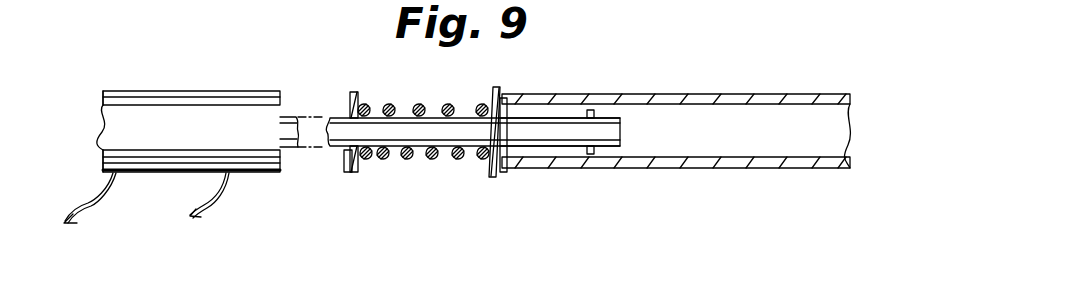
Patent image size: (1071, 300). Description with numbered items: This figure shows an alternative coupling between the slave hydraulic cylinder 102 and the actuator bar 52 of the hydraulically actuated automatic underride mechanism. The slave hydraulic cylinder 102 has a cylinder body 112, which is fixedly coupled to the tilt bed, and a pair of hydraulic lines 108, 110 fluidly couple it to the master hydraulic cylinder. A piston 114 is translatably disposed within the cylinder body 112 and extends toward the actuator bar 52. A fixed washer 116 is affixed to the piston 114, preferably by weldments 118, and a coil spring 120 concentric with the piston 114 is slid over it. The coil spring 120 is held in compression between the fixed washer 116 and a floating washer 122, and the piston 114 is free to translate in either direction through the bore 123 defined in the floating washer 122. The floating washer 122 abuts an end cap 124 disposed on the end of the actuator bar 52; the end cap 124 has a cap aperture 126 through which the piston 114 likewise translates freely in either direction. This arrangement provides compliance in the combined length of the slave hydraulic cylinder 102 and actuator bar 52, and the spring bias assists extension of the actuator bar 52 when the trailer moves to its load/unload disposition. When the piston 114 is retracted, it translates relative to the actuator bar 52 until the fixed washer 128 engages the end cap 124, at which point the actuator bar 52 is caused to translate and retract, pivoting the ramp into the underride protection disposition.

The actuator bar 52 is at (712, 94).
The slave hydraulic cylinder 102 is at (188, 94).
The hydraulic line 108 is at (90, 218).
The hydraulic line 110 is at (186, 194).
The cylinder body 112 is at (132, 92).
The piston 114 is at (288, 116).
The fixed washer 116 is at (355, 92).
The weldments 118 is at (342, 165).
The coil spring 120 is at (406, 158).
The floating washer 122 is at (497, 178).
The bore 123 is at (495, 136).
The end cap 124 is at (515, 168).
The cap aperture 126 is at (505, 122).
The fixed washer 128 is at (594, 152).